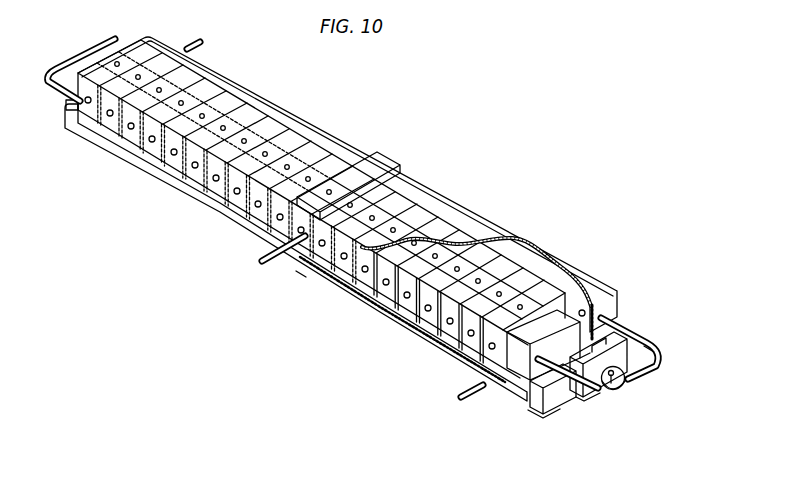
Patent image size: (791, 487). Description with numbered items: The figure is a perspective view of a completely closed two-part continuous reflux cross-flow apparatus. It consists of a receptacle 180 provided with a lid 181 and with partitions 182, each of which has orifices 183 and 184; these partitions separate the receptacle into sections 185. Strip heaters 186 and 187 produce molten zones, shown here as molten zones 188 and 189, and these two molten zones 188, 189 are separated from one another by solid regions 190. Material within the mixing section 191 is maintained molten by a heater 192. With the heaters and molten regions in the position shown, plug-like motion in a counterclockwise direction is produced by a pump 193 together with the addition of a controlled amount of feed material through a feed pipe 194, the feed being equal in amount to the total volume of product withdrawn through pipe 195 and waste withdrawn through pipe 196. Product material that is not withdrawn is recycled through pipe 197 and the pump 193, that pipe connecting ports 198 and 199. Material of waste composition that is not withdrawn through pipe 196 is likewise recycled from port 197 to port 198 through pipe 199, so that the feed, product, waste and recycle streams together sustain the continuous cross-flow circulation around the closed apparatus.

The receptacle 180 is at (455, 205).
The lid 181 is at (487, 240).
The partitions 182 is at (460, 338).
The orifice 183 is at (413, 335).
The orifice 184 is at (558, 272).
The sections 185 is at (490, 258).
The strip heater 186 is at (555, 408).
The strip heater 187 is at (650, 340).
The molten zone 188 is at (350, 270).
The molten zone 189 is at (591, 300).
The solid regions 190 is at (568, 386).
The mixing section 191 is at (298, 270).
The heater 192 is at (384, 152).
The pump 193 is at (621, 390).
The pipe 194 is at (262, 260).
The pipe 195 is at (480, 400).
The pipe 196 is at (190, 43).
The pipe 197 is at (148, 70).
The port 198 is at (66, 99).
The port 199 is at (66, 56).